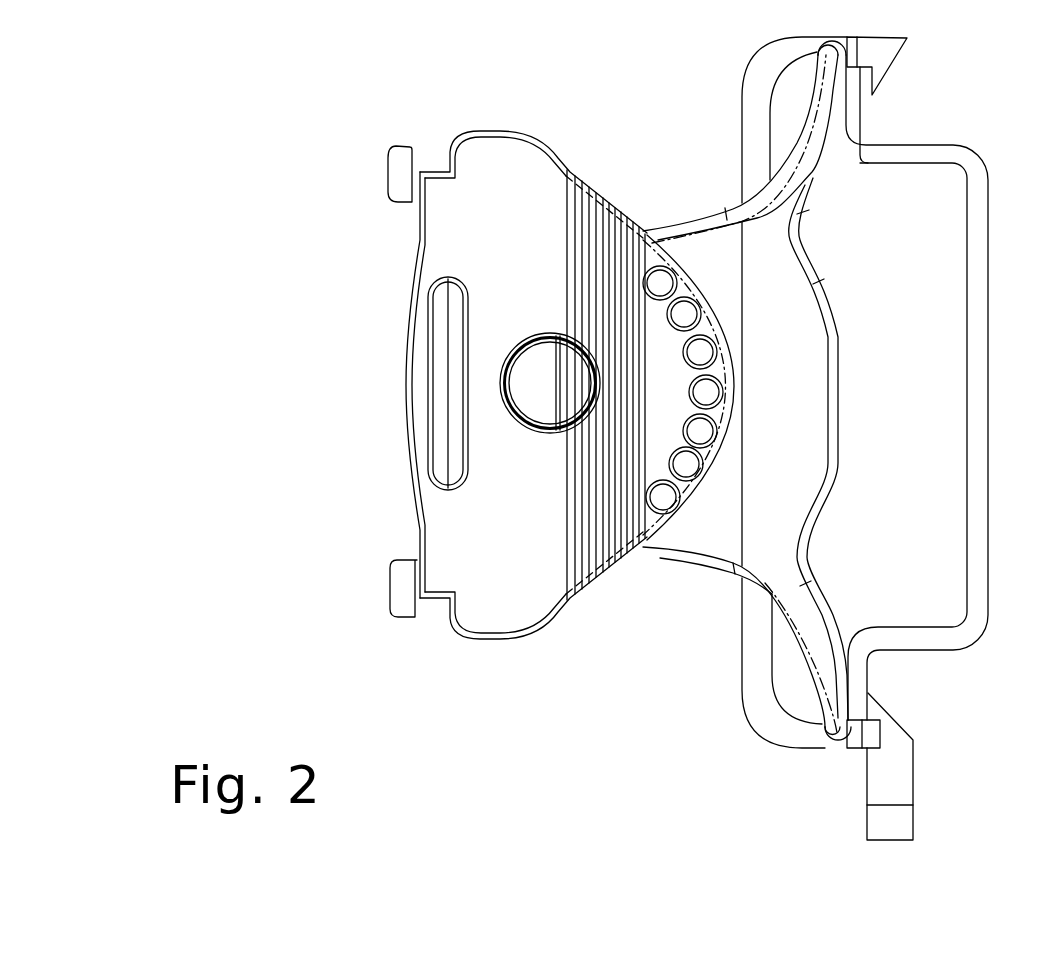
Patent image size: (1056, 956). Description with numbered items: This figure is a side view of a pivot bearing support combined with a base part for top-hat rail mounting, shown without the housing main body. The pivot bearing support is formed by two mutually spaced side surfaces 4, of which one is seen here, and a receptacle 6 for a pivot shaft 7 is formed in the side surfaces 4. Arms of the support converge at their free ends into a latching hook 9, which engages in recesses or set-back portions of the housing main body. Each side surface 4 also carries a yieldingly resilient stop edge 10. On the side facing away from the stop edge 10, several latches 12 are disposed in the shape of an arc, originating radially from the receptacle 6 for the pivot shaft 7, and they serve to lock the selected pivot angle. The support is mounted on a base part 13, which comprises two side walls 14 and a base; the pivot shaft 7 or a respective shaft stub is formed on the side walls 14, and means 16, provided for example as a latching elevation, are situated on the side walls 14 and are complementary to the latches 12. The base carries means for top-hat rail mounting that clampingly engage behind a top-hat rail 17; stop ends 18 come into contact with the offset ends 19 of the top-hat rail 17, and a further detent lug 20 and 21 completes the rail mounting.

The side surfaces 4 is at (493, 168).
The receptacle 6 is at (525, 430).
The pivot shaft 7 is at (558, 418).
The latching hook 9 is at (400, 165).
The stop edge 10 is at (410, 383).
The latches 12 is at (677, 284).
The base part 13 is at (697, 207).
The side walls 14 is at (805, 322).
The means complementary to the latches 16 is at (708, 394).
The top-hat rail 17 is at (920, 152).
The stop ends 18 is at (828, 50).
The offset ends 19 is at (856, 90).
The detent lug 20 is at (894, 738).
The detent lug 21 is at (886, 53).